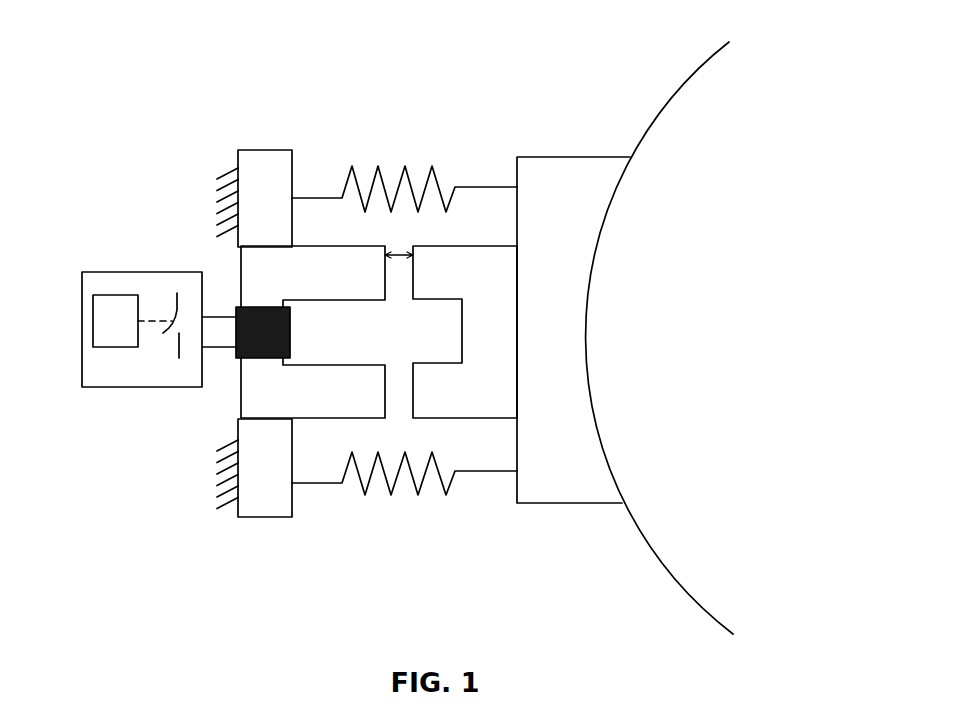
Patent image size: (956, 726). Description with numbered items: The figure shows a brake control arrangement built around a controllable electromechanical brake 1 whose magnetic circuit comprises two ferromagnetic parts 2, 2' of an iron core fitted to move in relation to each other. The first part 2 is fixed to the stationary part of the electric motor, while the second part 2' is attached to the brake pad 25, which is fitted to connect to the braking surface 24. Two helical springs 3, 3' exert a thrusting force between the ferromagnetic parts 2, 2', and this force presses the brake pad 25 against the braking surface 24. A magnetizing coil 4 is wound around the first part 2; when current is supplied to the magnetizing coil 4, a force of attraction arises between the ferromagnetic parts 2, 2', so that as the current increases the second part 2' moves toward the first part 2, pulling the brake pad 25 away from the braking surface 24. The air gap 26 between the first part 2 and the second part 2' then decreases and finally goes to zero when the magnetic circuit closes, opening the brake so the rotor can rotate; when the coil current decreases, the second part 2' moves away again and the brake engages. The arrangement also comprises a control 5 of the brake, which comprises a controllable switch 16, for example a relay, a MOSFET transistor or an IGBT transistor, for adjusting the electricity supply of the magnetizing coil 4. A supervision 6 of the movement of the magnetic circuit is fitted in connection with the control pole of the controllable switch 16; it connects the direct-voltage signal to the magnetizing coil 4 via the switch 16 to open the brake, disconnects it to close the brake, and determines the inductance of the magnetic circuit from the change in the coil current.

The electromechanical brake 1 is at (247, 131).
The first ferromagnetic part 2 is at (313, 435).
The second ferromagnetic part 2' is at (465, 435).
The helical spring 3 is at (404, 132).
The helical spring 3' is at (404, 538).
The magnetizing coil 4 is at (290, 330).
The control 5 is at (120, 272).
The supervision of movement 6 is at (117, 347).
The controllable switch 16 is at (168, 335).
The braking surface 24 is at (650, 553).
The brake pad 25 is at (552, 157).
The air gap 26 is at (397, 258).